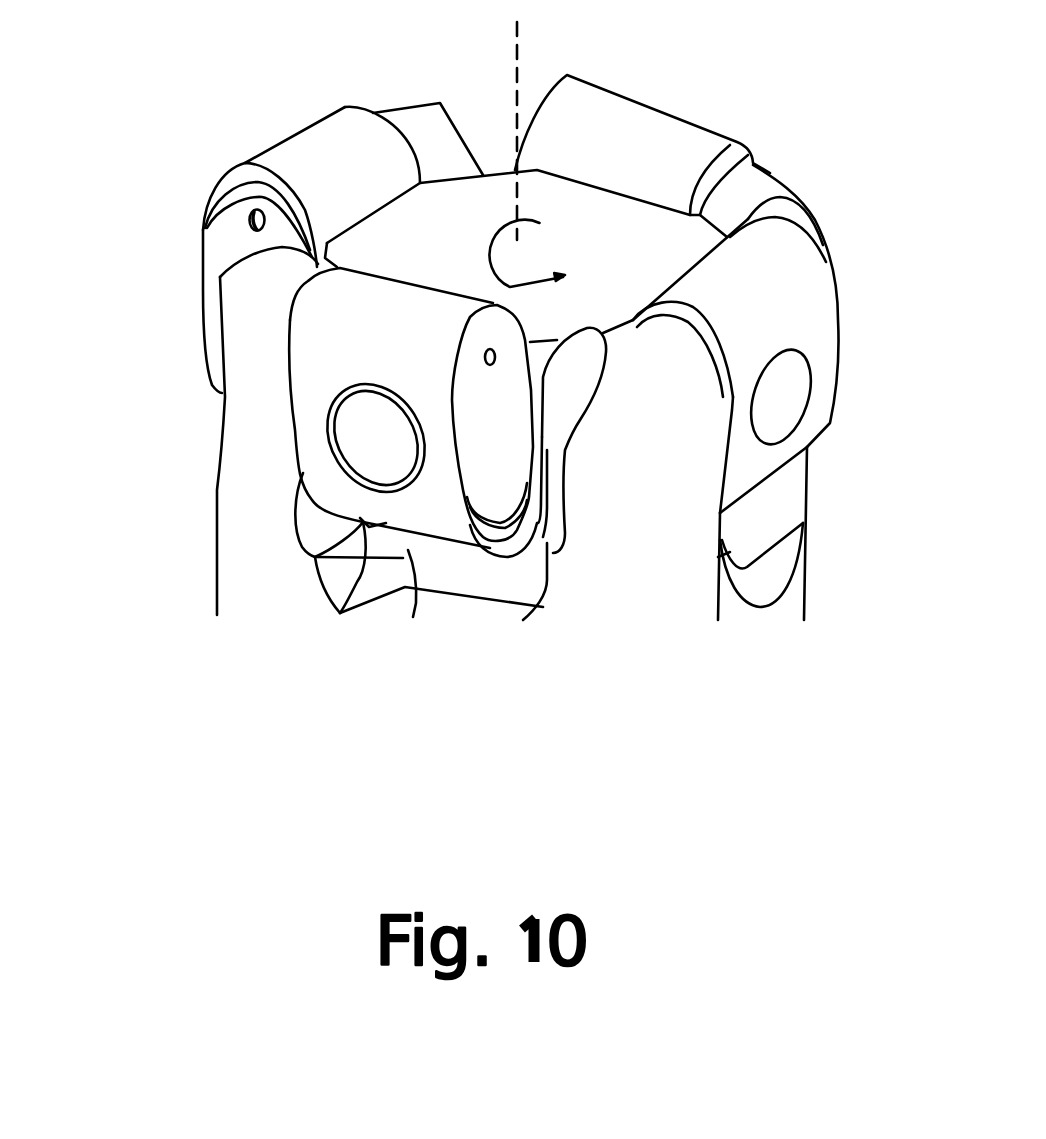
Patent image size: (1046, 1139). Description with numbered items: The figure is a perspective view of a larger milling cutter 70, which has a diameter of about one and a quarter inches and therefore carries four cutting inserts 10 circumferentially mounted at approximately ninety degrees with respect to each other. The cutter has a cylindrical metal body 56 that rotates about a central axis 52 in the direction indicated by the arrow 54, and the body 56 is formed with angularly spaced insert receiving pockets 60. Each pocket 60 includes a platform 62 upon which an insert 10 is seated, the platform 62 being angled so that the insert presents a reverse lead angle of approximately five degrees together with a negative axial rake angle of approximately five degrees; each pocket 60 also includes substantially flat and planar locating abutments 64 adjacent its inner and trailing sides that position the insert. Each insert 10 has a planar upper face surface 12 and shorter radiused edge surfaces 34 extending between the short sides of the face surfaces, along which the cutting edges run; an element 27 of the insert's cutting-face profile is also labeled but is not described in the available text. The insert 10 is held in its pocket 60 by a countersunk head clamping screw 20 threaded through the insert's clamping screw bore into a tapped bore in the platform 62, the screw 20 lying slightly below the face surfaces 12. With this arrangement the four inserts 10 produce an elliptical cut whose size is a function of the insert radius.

The cutting insert 10 is at (850, 307).
The first planar face surface 12 is at (840, 360).
The countersunk head screw 20 is at (410, 420).
The surface 27 is at (510, 461).
The first shorter radiused edge surface 34 is at (357, 300).
The central axis 52 is at (517, 50).
The arrow 54 is at (477, 240).
The cylindrical metal body 56 is at (803, 612).
The insert receiving pocket 60 is at (830, 477).
The platform 62 is at (683, 272).
The locating abutment 64 is at (530, 540).
The milling cutter 70 is at (203, 450).